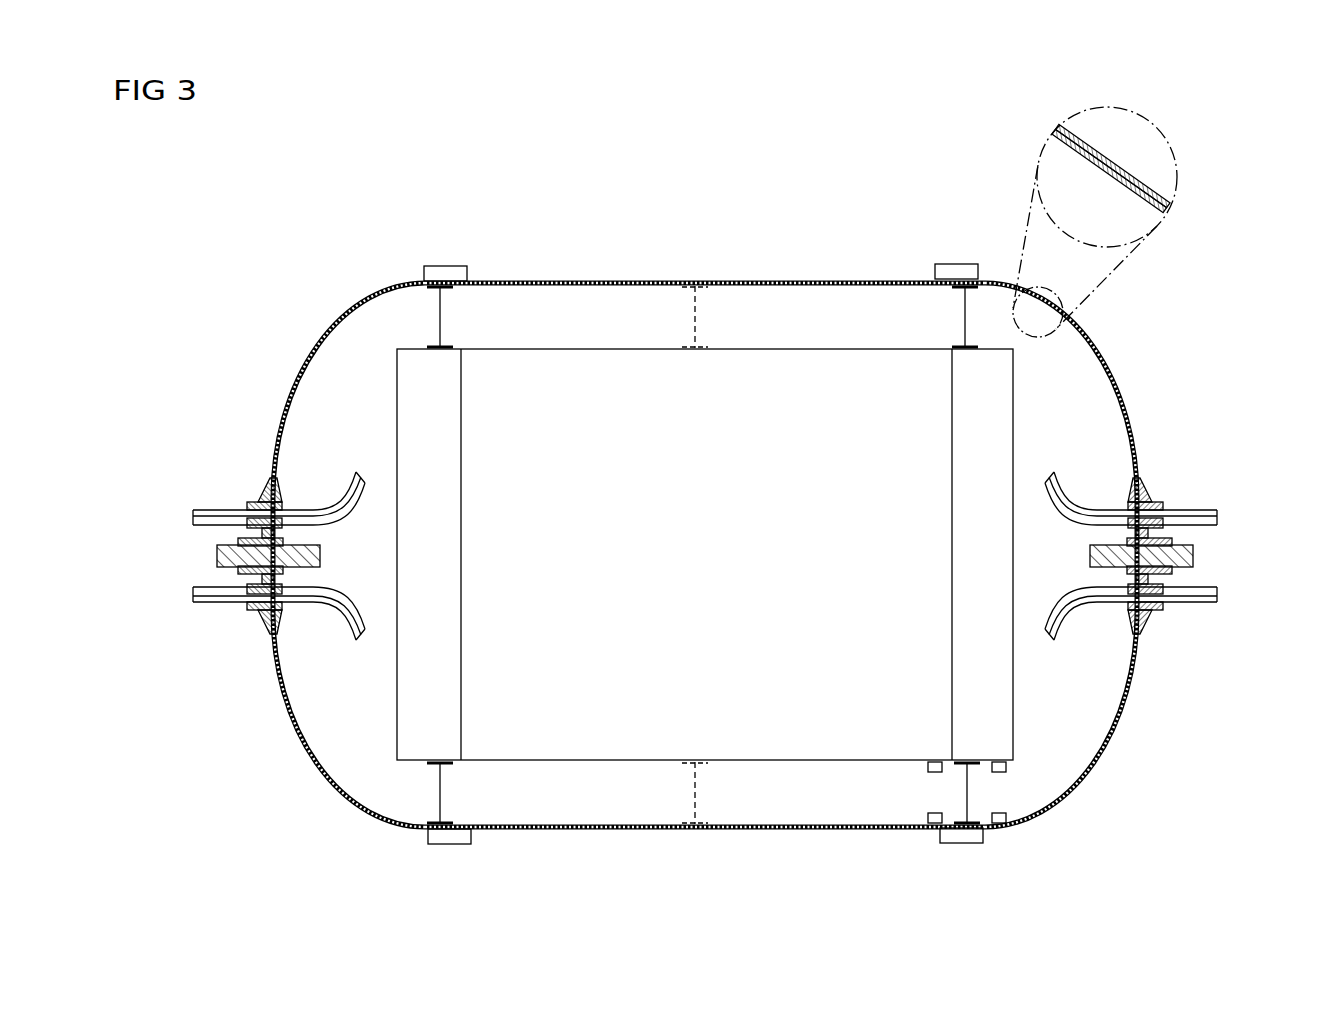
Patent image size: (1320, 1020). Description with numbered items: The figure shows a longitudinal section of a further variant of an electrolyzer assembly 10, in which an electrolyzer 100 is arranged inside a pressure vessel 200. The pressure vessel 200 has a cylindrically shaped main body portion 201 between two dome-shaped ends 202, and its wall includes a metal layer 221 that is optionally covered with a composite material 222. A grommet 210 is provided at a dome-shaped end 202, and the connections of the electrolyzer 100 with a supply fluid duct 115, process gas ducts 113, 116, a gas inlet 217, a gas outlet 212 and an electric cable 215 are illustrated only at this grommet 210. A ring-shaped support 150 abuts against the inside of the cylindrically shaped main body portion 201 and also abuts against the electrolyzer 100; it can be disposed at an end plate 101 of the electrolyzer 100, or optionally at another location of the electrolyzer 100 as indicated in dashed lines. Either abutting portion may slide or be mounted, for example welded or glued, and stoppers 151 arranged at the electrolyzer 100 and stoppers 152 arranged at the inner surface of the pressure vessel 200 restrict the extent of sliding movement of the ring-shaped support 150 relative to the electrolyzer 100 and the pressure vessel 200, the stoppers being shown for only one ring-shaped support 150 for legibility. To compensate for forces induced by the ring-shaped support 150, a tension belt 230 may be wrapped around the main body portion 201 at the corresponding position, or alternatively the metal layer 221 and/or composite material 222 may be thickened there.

The electrolyzer assembly 10 is at (217, 257).
The electrolyzer 100 is at (576, 347).
The end plate 101 is at (397, 724).
The process gas duct 113 is at (1213, 514).
The fluid duct 115 is at (193, 516).
The process gas duct 116 is at (1180, 595).
The ring-shaped support 150 is at (443, 313).
The stopper 151 is at (929, 766).
The stopper 152 is at (929, 817).
The pressure vessel 200 is at (781, 274).
The cylindrically shaped main body portion 201 is at (876, 280).
The dome-shaped end 202 is at (333, 336).
The grommet 210 is at (256, 494).
The gas outlet 212 is at (1213, 587).
The electric cable 215 is at (217, 551).
The gas inlet 217 is at (193, 592).
The metal layer 221 is at (1058, 137).
The composite material 222 is at (1153, 177).
The tension belt 230 is at (446, 272).